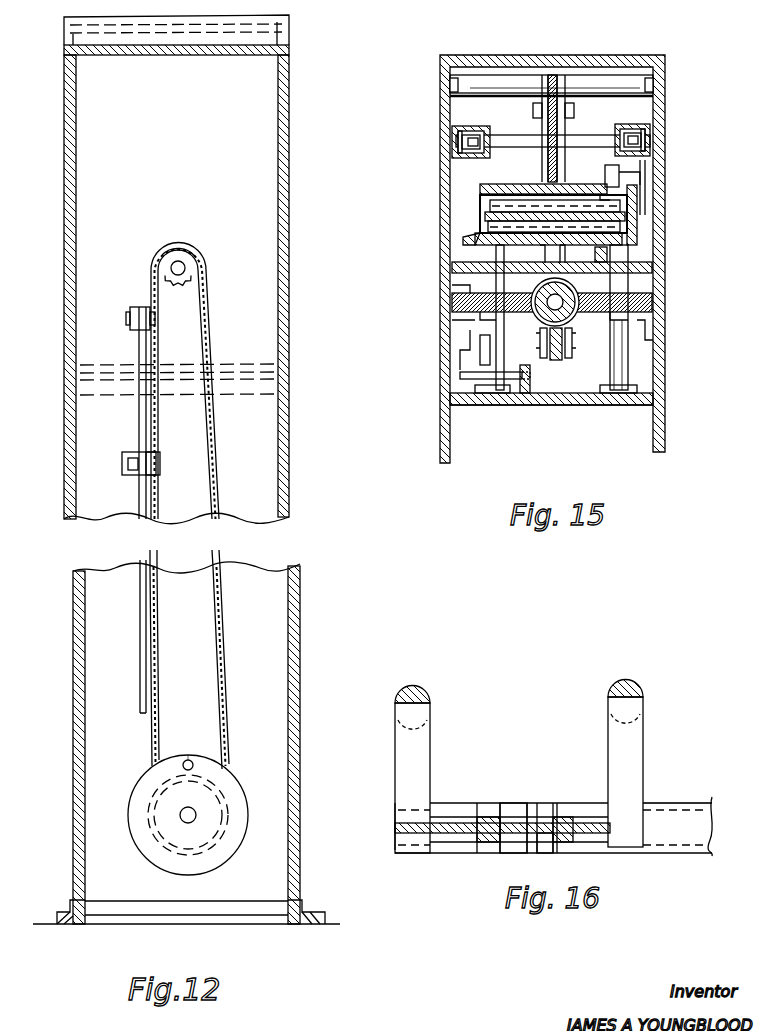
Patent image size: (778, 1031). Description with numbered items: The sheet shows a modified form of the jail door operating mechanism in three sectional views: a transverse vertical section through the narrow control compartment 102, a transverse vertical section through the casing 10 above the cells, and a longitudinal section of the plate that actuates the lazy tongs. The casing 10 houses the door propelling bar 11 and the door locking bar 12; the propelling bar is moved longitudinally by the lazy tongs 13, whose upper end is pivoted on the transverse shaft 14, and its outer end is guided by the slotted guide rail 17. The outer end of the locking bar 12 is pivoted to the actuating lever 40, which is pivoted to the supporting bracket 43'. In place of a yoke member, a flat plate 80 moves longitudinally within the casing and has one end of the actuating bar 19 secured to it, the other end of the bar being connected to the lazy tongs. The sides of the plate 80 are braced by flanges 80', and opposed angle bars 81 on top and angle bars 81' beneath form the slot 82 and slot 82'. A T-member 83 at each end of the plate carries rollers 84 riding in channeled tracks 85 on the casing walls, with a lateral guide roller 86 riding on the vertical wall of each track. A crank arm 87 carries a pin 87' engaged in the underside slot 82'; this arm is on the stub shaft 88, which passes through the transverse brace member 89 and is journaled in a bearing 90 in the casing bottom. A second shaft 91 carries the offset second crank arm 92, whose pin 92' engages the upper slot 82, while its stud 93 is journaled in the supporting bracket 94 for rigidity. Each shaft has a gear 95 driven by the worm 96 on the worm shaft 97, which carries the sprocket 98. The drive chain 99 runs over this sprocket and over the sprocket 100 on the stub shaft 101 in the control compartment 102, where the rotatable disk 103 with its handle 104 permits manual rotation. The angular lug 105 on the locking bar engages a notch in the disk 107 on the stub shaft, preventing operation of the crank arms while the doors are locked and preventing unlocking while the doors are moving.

In FIG. 15, the casing 10 is at (445, 116).
In FIG. 15, the door propelling bar 11 is at (568, 356).
In FIG. 12, the door locking bar 12 is at (130, 307).
In FIG. 15, the door locking bar 12 is at (530, 335).
In FIG. 15, the lazy tongs 13 is at (560, 72).
In FIG. 15, the transverse shaft 14 is at (485, 82).
In FIG. 15, the guide rail 17 is at (565, 405).
In FIG. 16, the actuating bar 19 is at (695, 845).
In FIG. 12, the actuating lever 40 is at (139, 426).
In FIG. 12, the supporting bracket 43' is at (87, 475).
In FIG. 15, the flat plate 80 is at (601, 214).
In FIG. 16, the flat plate 80 is at (553, 847).
In FIG. 15, the flanges 80' is at (555, 209).
In FIG. 16, the angle bars 81 is at (529, 807).
In FIG. 16, the angle bars 81' is at (502, 852).
In FIG. 16, the slot 82 is at (524, 795).
In FIG. 16, the slot 82' is at (544, 853).
In FIG. 15, the T-member 83 is at (575, 138).
In FIG. 16, the T-member 83 is at (410, 763).
In FIG. 15, the rollers 84 is at (485, 148).
In FIG. 16, the rollers 84 is at (408, 698).
In FIG. 15, the channeled tracks 85 is at (452, 160).
In FIG. 15, the guide roller 86 is at (452, 140).
In FIG. 15, the crank arm 87 is at (494, 228).
In FIG. 15, the pin 87' is at (600, 243).
In FIG. 15, the stub shaft 88 is at (452, 300).
In FIG. 15, the transverse brace member 89 is at (653, 280).
In FIG. 15, the bearing 90 is at (480, 405).
In FIG. 15, the second shaft 91 is at (645, 365).
In FIG. 15, the second crank arm 92 is at (674, 210).
In FIG. 15, the pin 92' is at (434, 235).
In FIG. 15, the stud 93 is at (605, 165).
In FIG. 15, the supporting bracket 94 is at (653, 165).
In FIG. 15, the gear 95 is at (470, 318).
In FIG. 15, the worm 96 is at (640, 330).
In FIG. 12, the worm shaft 97 is at (185, 268).
In FIG. 15, the worm shaft 97 is at (485, 347).
In FIG. 12, the sprocket 98 is at (172, 250).
In FIG. 12, the drive chain 99 is at (210, 326).
In FIG. 12, the sprocket 100 is at (238, 836).
In FIG. 12, the stub shaft 101 is at (183, 822).
In FIG. 12, the control compartment 102 is at (108, 146).
In FIG. 12, the rotatable disk 103 is at (140, 814).
In FIG. 12, the handle 104 is at (192, 760).
In FIG. 15, the angular lug 105 is at (460, 370).
In FIG. 15, the disk 107 is at (452, 385).